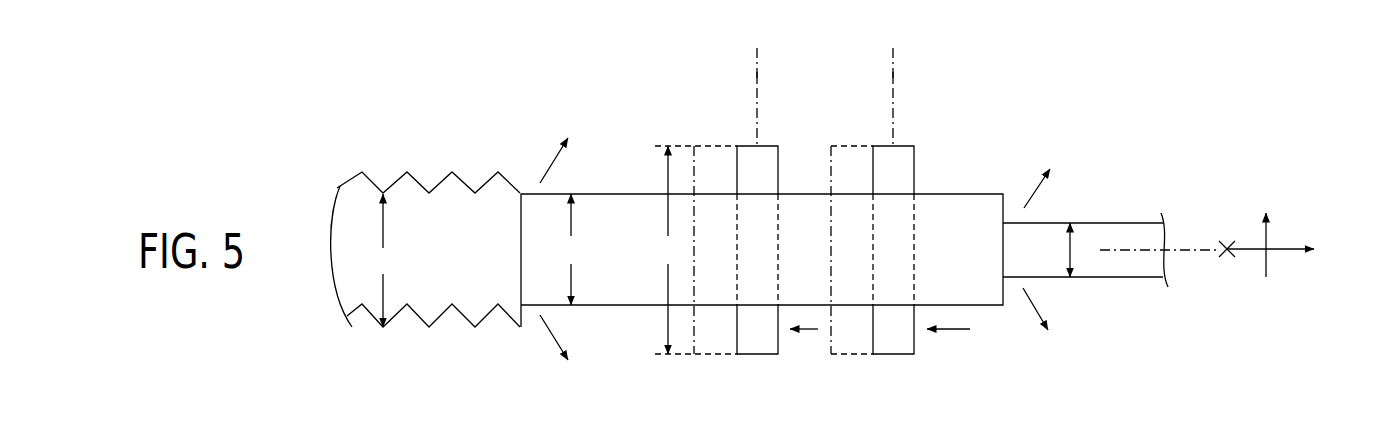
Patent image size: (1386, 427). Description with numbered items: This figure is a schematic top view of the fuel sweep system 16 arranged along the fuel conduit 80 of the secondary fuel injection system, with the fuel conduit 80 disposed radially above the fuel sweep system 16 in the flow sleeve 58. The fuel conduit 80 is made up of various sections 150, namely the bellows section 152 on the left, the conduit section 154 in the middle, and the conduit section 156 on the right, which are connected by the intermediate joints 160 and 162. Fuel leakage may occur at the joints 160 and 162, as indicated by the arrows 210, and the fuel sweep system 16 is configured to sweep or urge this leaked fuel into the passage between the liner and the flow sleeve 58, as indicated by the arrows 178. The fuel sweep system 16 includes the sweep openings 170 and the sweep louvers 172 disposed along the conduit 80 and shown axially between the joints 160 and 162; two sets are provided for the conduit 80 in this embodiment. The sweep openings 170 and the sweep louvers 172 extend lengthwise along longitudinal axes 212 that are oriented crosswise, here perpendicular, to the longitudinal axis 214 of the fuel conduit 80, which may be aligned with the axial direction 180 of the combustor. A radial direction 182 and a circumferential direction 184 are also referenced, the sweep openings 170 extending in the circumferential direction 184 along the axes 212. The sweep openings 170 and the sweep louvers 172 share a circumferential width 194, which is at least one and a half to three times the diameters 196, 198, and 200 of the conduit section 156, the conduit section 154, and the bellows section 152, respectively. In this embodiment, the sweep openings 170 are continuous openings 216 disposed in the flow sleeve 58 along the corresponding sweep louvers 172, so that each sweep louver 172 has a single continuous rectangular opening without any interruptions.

The fuel sweep system 16 is at (910, 121).
The flow sleeve 58 is at (632, 352).
The fuel conduit 80 is at (571, 110).
The sections 150 is at (331, 364).
The bellows section 152 is at (434, 324).
The conduit section 154 is at (640, 194).
The conduit section 156 is at (1125, 278).
The intermediate joint 160 is at (520, 257).
The intermediate joint 162 is at (1003, 250).
The sweep openings 170 is at (893, 354).
The sweep louvers 172 is at (712, 146).
The arrows 178 is at (790, 170).
The axial direction 180 is at (1287, 255).
The radial direction 182 is at (1233, 258).
The circumferential direction 184 is at (1268, 241).
The circumferential width 194 is at (694, 250).
The diameter 196 is at (1075, 252).
The diameter 198 is at (571, 249).
The diameter 200 is at (382, 260).
The arrows 210 is at (546, 165).
The longitudinal axes 212 is at (893, 77).
The longitudinal axis 214 is at (1184, 248).
The continuous openings 216 is at (757, 328).